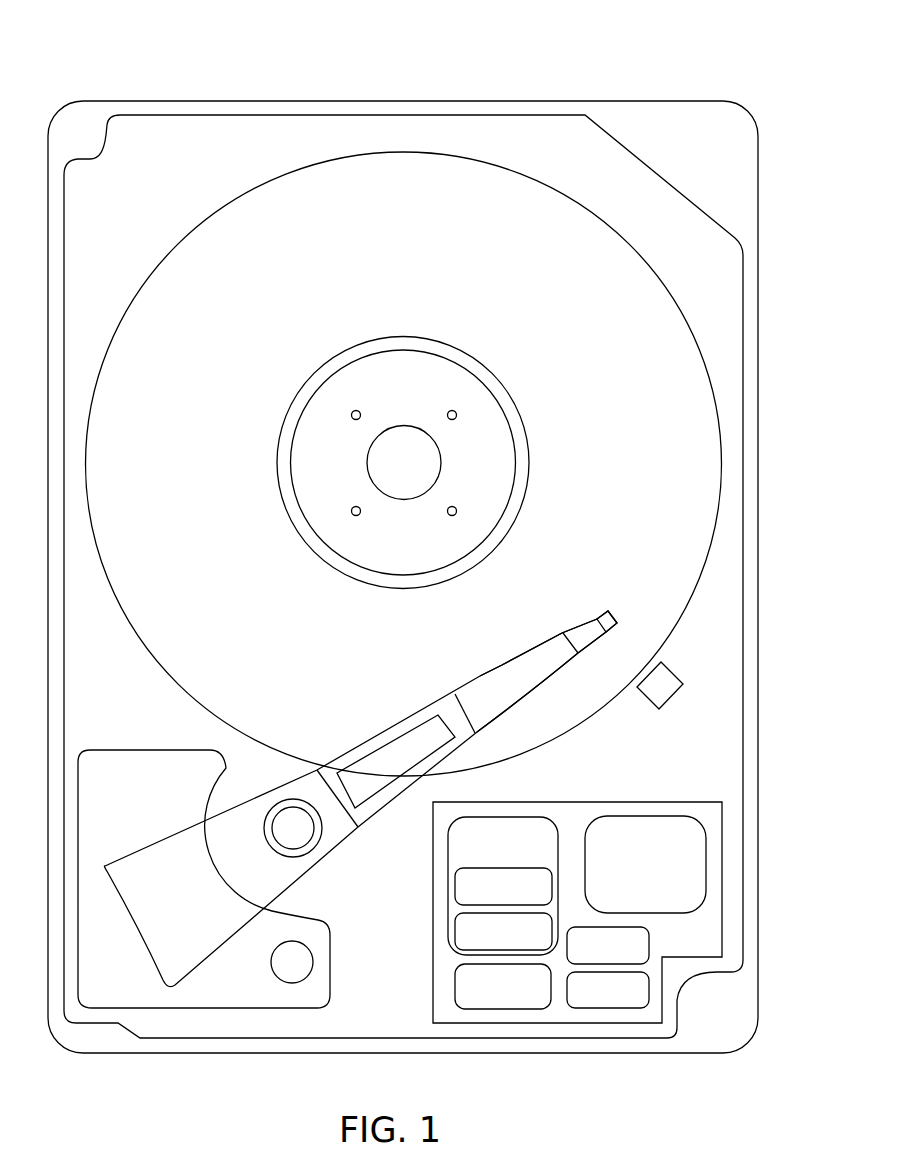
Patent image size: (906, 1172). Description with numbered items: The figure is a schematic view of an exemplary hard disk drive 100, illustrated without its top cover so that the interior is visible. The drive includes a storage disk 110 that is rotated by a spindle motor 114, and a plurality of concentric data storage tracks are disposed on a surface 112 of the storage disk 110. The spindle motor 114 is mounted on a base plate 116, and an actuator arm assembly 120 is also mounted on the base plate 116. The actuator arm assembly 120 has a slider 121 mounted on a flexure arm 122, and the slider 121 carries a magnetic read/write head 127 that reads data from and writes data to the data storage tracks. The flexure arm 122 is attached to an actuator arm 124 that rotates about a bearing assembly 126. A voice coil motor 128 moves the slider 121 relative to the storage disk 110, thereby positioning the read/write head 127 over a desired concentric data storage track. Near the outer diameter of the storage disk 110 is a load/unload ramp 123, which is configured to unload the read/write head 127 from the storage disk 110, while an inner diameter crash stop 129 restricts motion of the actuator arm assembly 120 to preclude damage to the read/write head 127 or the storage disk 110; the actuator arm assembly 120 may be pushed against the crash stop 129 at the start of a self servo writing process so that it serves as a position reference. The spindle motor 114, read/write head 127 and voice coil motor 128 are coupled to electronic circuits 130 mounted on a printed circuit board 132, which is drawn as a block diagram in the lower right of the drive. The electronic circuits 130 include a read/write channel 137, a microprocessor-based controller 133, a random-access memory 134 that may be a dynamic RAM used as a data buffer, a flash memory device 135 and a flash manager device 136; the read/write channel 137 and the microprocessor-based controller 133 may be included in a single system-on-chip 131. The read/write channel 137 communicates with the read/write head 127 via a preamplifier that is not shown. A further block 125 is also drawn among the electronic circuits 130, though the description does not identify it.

The hard disk drive 100 is at (438, 532).
The storage disk 110 is at (404, 459).
The surface of storage disk 112 is at (169, 447).
The spindle motor 114 is at (500, 403).
The base plate 116 is at (745, 602).
The actuator arm assembly 120 is at (399, 716).
The slider 121 is at (613, 614).
The flexure arm 122 is at (577, 622).
The load/unload ramp 123 is at (683, 680).
The actuator arm 124 is at (473, 678).
The memory 125 is at (482, 1000).
The bearing assembly 126 is at (320, 873).
The magnetic read/write head 127 is at (607, 588).
The voice coil motor 128 is at (249, 882).
The inner diameter crash stop 129 is at (292, 984).
The electronic circuits 130 is at (581, 869).
The system-on-chip 131 is at (482, 860).
The printed circuit board 132 is at (661, 801).
The microprocessor-based controller 133 is at (482, 902).
The random-access memory 134 is at (586, 962).
The flash memory device 135 is at (624, 880).
The flash manager device 136 is at (586, 1005).
The read/write channel 137 is at (482, 946).